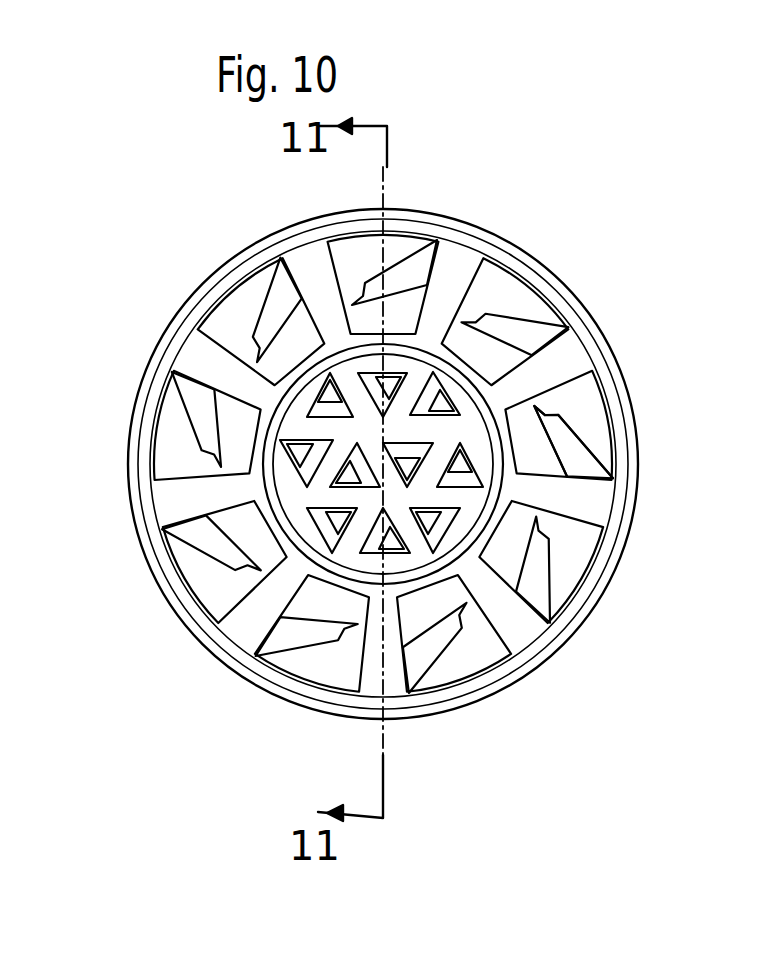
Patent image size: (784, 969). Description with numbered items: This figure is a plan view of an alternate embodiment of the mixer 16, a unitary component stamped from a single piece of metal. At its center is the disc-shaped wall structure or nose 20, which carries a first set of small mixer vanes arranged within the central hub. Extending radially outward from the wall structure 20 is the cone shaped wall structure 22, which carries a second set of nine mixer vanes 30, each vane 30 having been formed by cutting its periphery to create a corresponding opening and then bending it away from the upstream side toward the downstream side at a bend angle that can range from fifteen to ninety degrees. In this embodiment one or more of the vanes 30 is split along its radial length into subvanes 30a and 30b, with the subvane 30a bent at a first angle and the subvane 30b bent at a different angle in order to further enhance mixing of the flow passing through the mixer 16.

The mixer 16 is at (633, 300).
The disc-shaped wall structure 20 is at (302, 428).
The cone shaped wall structure 22 is at (446, 273).
The mixer vanes 30 is at (573, 415).
The subvane 30a is at (570, 447).
The subvane 30b is at (535, 455).